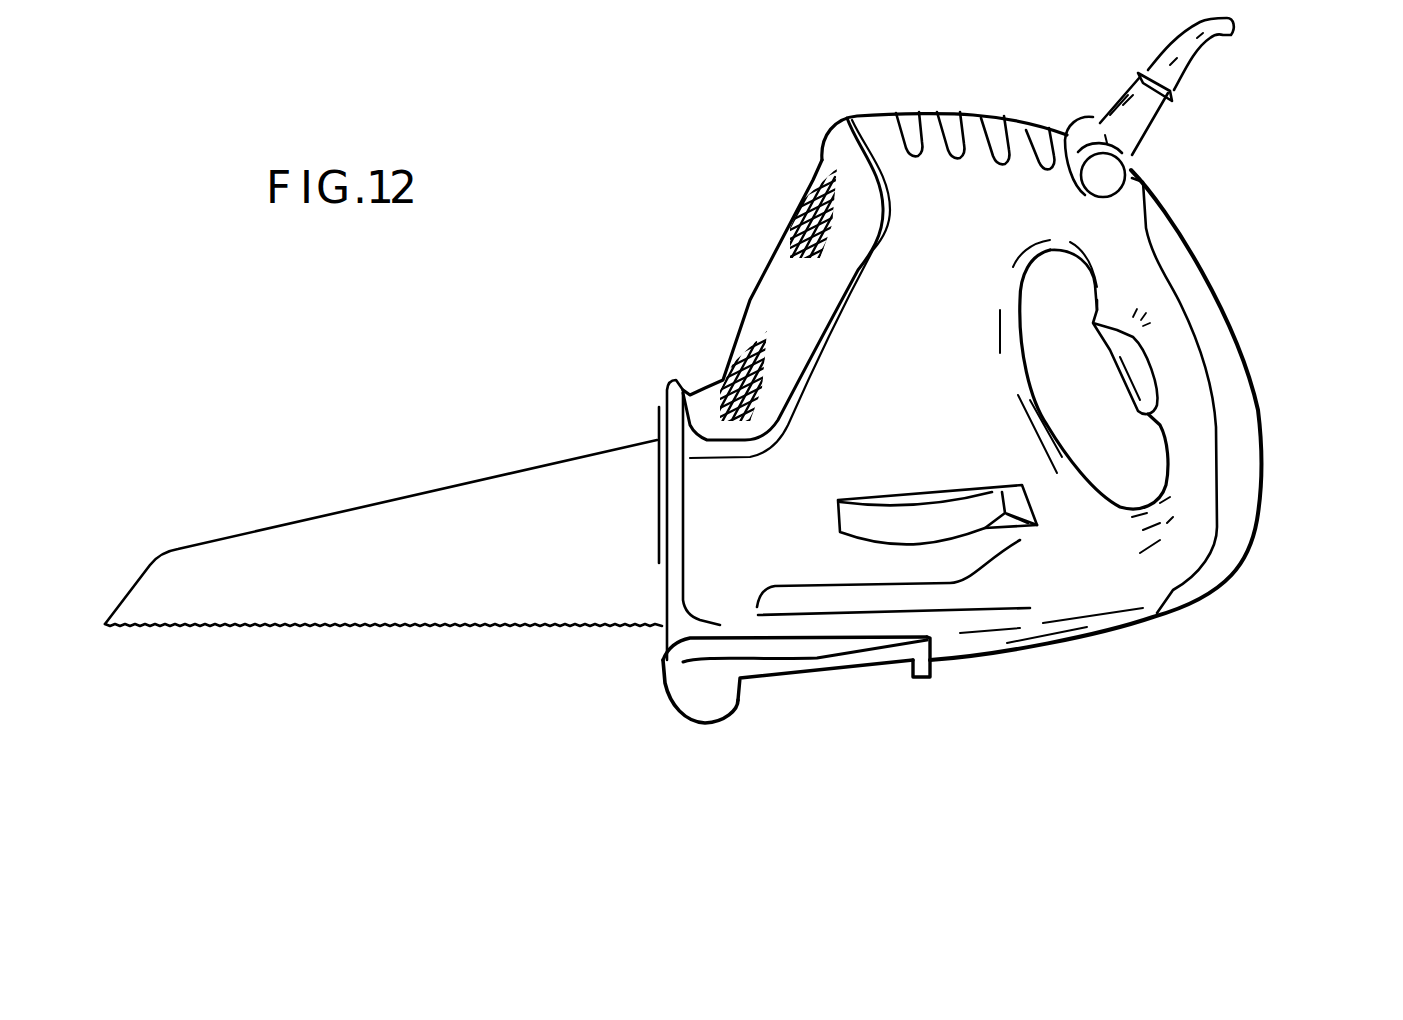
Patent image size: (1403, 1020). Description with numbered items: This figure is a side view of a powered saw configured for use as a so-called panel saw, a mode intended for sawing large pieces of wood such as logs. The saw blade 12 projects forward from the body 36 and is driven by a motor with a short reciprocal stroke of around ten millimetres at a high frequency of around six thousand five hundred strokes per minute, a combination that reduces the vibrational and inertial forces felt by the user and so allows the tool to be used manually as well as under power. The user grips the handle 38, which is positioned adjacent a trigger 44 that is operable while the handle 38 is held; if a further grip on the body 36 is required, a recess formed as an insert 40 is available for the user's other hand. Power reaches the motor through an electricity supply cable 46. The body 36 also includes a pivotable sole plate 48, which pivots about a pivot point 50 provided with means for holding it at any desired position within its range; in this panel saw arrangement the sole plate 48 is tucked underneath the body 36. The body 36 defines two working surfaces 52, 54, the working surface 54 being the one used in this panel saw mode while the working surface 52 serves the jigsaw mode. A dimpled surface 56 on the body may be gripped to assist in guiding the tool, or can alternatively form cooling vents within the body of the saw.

The saw blade 12 is at (290, 598).
The body 36 is at (1087, 607).
The handle 38 is at (1257, 493).
The insert 40 is at (770, 283).
The trigger 44 is at (1140, 377).
The electricity supply cable 46 is at (1223, 40).
The sole plate 48 is at (813, 665).
The pivot point 50 is at (705, 688).
The working surface 52 is at (652, 430).
The working surface 54 is at (870, 667).
The dimpled surface 56 is at (943, 120).